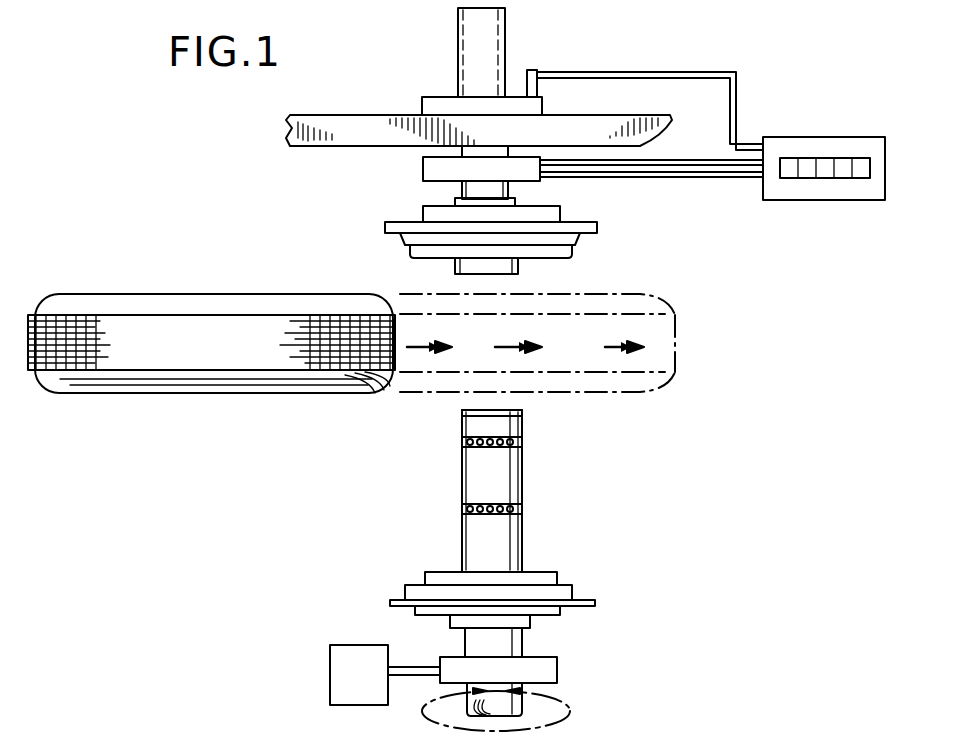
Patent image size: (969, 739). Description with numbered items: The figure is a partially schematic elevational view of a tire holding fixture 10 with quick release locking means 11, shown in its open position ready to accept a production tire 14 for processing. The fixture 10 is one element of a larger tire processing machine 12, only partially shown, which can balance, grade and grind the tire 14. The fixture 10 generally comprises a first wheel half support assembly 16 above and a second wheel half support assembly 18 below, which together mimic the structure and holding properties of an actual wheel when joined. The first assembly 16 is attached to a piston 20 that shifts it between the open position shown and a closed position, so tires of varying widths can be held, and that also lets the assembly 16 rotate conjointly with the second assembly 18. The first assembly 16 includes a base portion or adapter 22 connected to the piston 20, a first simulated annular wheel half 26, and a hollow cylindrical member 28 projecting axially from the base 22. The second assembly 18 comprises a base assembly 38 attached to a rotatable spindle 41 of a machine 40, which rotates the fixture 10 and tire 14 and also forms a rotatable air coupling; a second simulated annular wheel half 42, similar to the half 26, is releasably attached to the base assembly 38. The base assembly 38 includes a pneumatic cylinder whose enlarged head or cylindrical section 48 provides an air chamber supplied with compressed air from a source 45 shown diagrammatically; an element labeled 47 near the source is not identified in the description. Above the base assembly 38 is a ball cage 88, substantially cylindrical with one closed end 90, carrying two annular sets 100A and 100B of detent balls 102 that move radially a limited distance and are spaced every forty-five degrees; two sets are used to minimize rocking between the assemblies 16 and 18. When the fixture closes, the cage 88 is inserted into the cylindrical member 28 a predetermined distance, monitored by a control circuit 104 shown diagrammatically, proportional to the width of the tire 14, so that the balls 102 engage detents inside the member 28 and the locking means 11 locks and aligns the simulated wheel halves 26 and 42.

The tire holding fixture 10 is at (688, 347).
The quick release locking means 11 is at (534, 504).
The tire processing machine 12 is at (562, 54).
The production tire 14 is at (117, 305).
The first wheel half support assembly 16 is at (390, 220).
The second wheel half support assembly 18 is at (592, 607).
The piston 20 is at (467, 34).
The base portion or adapter 22 is at (515, 200).
The first simulated annular wheel half 26 is at (405, 245).
The hollow cylindrical member 28 is at (520, 265).
The base assembly 38 is at (535, 620).
The machine 40 is at (548, 665).
The rotatable spindle 41 is at (465, 645).
The second simulated annular wheel half 42 is at (426, 574).
The source 45 is at (340, 667).
The drive coupling 47 is at (406, 684).
The enlarged head or cylindrical section 48 is at (620, 722).
The ball cage 88 is at (473, 425).
The closed end 90 is at (510, 408).
The annular set of detent balls 100A is at (460, 441).
The annular set of detent balls 100B is at (460, 508).
The detent balls 102 is at (500, 503).
The control circuit 104 is at (800, 200).